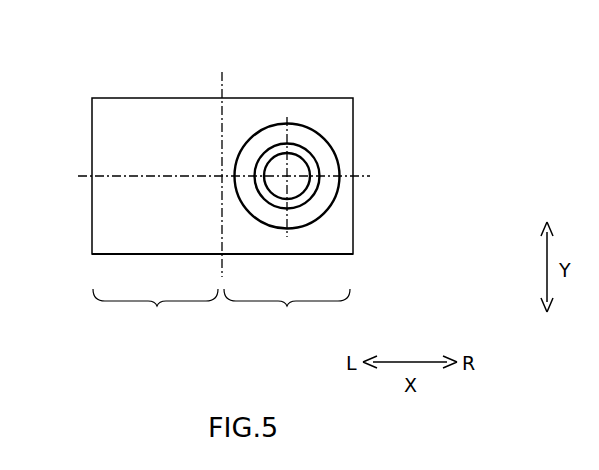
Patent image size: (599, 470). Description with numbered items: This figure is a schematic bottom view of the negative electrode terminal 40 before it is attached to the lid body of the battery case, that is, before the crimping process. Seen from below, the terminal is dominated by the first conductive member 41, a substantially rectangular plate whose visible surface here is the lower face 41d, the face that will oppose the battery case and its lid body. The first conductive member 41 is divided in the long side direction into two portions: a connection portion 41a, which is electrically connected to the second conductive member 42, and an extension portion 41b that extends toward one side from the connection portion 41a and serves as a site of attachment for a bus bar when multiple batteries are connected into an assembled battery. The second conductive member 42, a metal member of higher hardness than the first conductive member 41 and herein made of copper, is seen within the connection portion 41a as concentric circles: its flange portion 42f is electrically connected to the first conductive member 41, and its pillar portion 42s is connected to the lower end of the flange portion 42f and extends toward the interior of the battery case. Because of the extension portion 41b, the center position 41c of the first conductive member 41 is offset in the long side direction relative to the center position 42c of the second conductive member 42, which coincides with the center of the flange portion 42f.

The negative electrode terminal 40 is at (216, 176).
The first conductive member 41 is at (194, 185).
The connection portion 41a is at (287, 313).
The extension portion 41b is at (155, 313).
The center position of the first conductive member 41c is at (224, 175).
The lower face 41d is at (112, 126).
The second conductive member 42 is at (325, 149).
The center position of the second conductive member 42c is at (287, 175).
The flange portion 42f is at (322, 146).
The pillar portion 42s is at (310, 190).